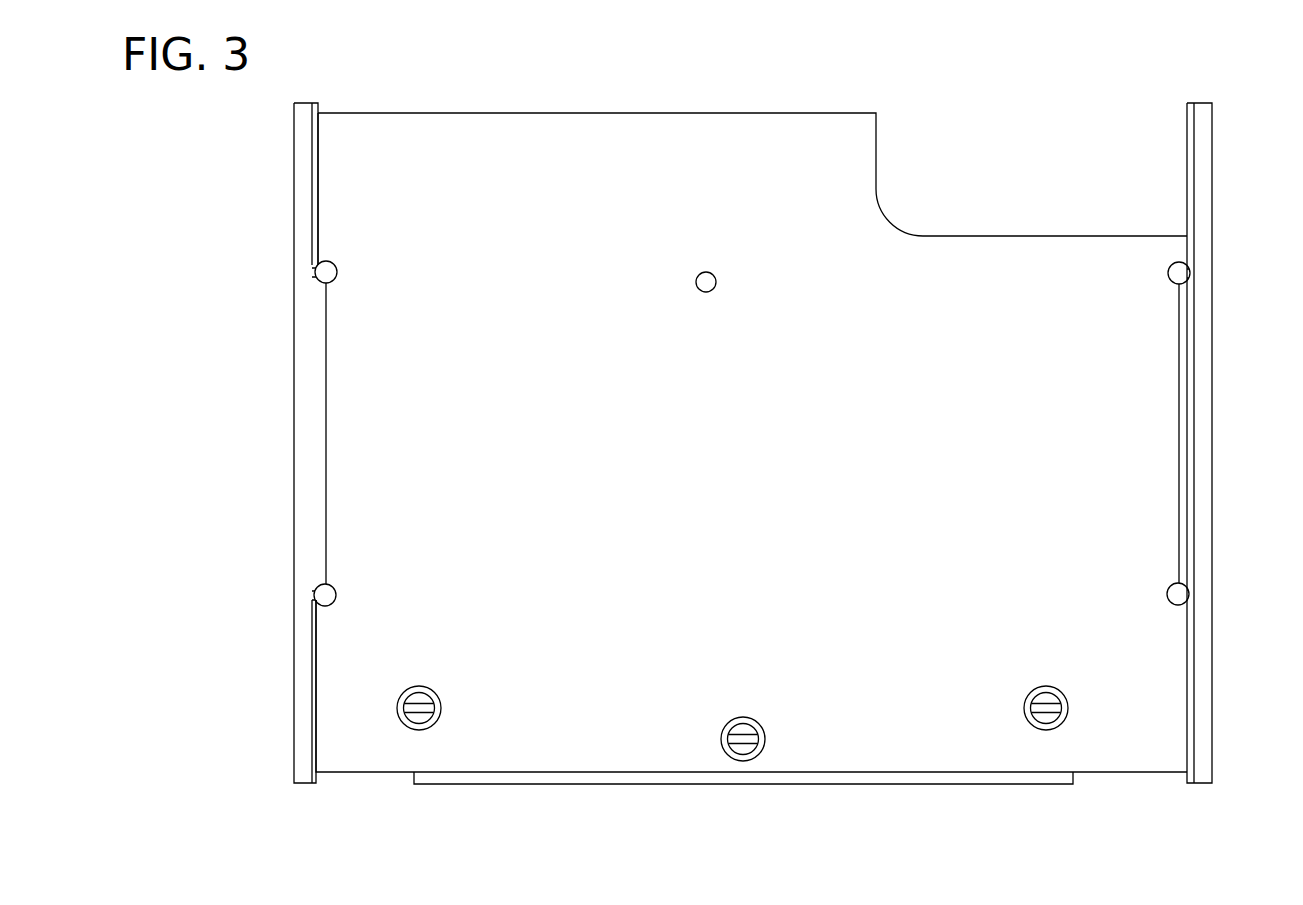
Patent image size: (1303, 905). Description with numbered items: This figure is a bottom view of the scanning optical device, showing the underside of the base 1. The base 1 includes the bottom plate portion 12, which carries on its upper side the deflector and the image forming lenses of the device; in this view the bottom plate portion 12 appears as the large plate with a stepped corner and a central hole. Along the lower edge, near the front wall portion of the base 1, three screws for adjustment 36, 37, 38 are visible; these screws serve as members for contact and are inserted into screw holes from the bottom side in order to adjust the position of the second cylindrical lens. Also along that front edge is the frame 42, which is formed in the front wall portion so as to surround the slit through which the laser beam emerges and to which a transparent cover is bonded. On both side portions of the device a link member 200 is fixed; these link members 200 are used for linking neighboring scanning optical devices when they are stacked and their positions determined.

The base 1 is at (751, 442).
The bottom plate portion 12 is at (975, 250).
The link member 200 is at (303, 178).
The screw for adjustment 36 is at (420, 720).
The screw for adjustment 37 is at (1046, 720).
The screw for adjustment 38 is at (742, 750).
The frame 42 is at (893, 784).